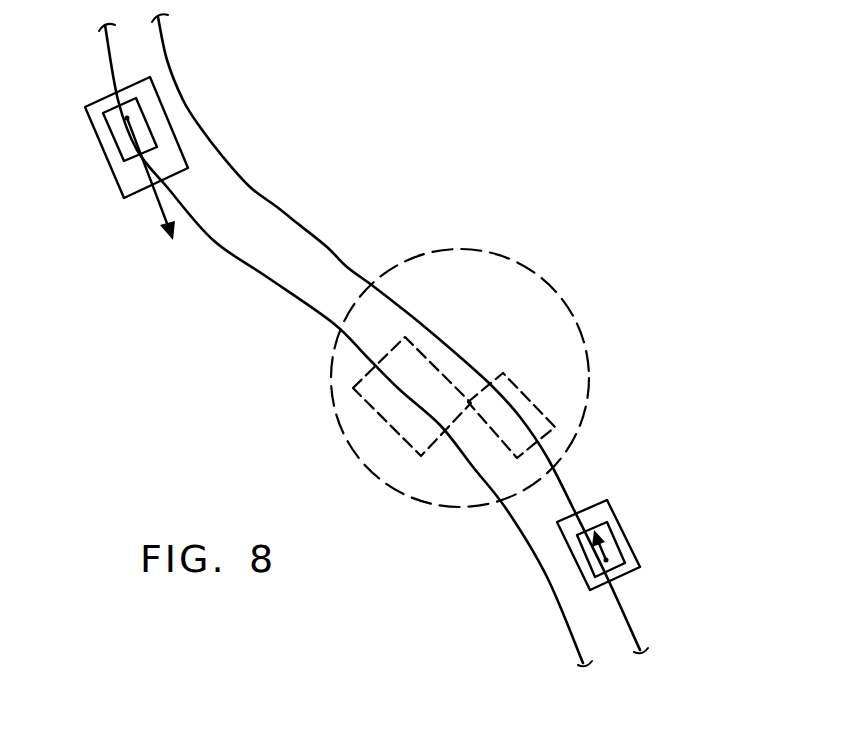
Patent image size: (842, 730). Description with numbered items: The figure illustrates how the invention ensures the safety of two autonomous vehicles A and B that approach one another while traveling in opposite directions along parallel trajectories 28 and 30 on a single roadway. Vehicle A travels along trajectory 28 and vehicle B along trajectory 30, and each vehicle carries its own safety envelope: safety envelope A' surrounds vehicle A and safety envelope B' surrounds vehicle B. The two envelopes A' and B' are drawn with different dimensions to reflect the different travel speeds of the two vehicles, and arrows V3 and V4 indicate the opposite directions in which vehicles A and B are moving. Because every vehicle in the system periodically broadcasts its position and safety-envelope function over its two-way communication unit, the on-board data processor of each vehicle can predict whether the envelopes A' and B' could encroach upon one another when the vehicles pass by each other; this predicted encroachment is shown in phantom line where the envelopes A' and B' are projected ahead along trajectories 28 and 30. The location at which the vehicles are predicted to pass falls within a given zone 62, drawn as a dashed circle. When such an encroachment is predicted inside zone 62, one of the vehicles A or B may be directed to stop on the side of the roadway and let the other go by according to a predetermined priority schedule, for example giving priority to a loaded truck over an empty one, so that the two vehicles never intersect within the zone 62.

The trajectory 28 is at (300, 222).
The trajectory 30 is at (547, 580).
The zone 62 is at (577, 303).
The vehicle B is at (102, 135).
The safety envelope B' is at (263, 266).
The velocity vector V4 is at (155, 208).
The vehicle A is at (641, 542).
The safety envelope A' is at (594, 454).
The velocity vector V3 is at (608, 555).